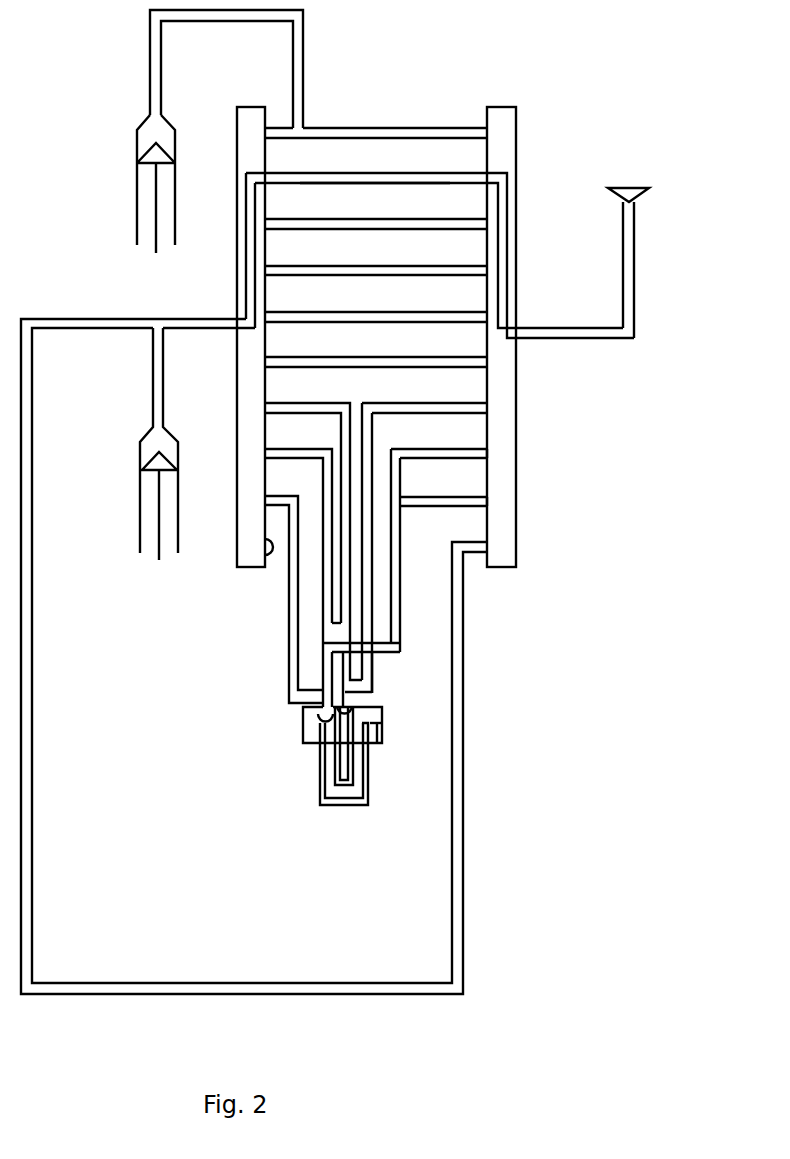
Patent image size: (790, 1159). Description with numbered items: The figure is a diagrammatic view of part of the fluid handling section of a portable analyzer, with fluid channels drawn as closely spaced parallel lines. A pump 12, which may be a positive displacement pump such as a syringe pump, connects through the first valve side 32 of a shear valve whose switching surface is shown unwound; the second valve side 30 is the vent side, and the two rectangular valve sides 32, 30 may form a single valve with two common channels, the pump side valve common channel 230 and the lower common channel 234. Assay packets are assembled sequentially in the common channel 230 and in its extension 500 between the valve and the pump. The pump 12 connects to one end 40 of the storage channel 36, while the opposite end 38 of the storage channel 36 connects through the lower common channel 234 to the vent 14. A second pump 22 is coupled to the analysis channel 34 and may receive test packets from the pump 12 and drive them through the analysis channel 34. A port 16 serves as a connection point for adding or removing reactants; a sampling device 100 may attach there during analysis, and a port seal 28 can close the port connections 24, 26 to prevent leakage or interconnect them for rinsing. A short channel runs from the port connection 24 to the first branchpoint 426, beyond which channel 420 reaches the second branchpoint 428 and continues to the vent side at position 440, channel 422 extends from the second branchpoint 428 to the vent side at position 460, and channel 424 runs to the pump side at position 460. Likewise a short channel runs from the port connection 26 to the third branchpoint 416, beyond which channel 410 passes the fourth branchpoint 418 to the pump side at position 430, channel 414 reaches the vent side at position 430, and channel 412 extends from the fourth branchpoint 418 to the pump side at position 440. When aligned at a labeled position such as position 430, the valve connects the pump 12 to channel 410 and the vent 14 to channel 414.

The pump 12 is at (156, 465).
The vent 14 is at (635, 200).
The port 16 is at (297, 765).
The second pump 22 is at (149, 157).
The port connection 24 is at (323, 717).
The port connection 26 is at (343, 708).
The port seal 28 is at (377, 732).
The second valve side 30 is at (497, 130).
The first valve side 32 is at (256, 115).
The analysis channel 34 is at (349, 129).
The storage channel 36 is at (388, 178).
The opposite end of storage channel 38 is at (482, 178).
The end of storage channel 40 is at (275, 177).
The sampling device 100 is at (322, 800).
The pump side valve common channel 230 is at (248, 293).
The lower common channel 234 is at (503, 270).
The channel 410 is at (287, 408).
The channel 412 is at (287, 457).
The channel 414 is at (458, 410).
The third branchpoint 416 is at (346, 690).
The fourth branchpoint 418 is at (341, 624).
The channel 420 is at (418, 456).
The channel 422 is at (416, 498).
The channel 424 is at (290, 605).
The first branchpoint 426 is at (325, 697).
The second branchpoint 428 is at (399, 498).
The valve position 430 is at (418, 392).
The valve position 440 is at (529, 461).
The valve position 460 is at (529, 506).
The extension of pump-side channel 500 is at (176, 318).